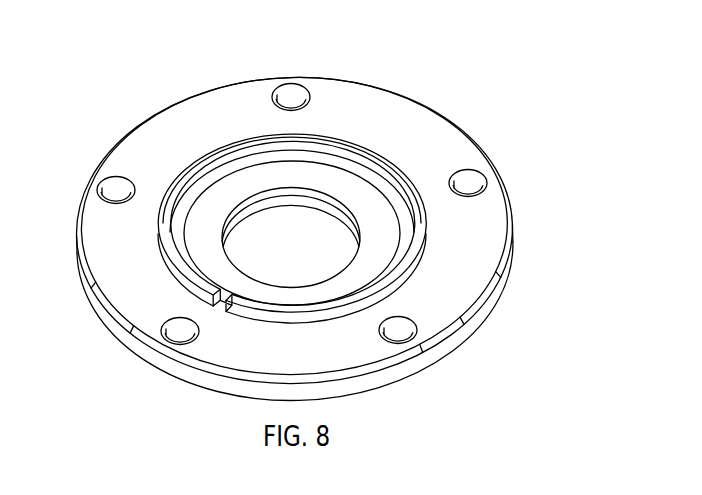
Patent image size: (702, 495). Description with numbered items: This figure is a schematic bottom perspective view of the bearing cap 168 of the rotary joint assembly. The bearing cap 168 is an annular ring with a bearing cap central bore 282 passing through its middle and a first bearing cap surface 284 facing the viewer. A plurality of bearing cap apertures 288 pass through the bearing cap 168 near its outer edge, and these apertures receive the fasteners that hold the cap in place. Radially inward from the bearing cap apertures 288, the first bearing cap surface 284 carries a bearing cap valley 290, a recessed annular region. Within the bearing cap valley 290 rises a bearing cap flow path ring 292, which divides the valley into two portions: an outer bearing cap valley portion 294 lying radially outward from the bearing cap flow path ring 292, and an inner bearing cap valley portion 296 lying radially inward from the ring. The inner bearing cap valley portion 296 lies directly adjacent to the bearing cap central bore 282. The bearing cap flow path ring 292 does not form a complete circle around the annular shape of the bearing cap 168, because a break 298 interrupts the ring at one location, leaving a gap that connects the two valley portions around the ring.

The bearing cap 168 is at (499, 114).
The bearing cap central bore 282 is at (315, 257).
The first bearing cap surface 284 is at (268, 361).
The bearing cap apertures 288 is at (108, 184).
The bearing cap valley 290 is at (198, 252).
The bearing cap flow path ring 292 is at (403, 223).
The outer bearing cap valley portion 294 is at (167, 192).
The inner bearing cap valley portion 296 is at (227, 204).
The break 298 is at (220, 306).